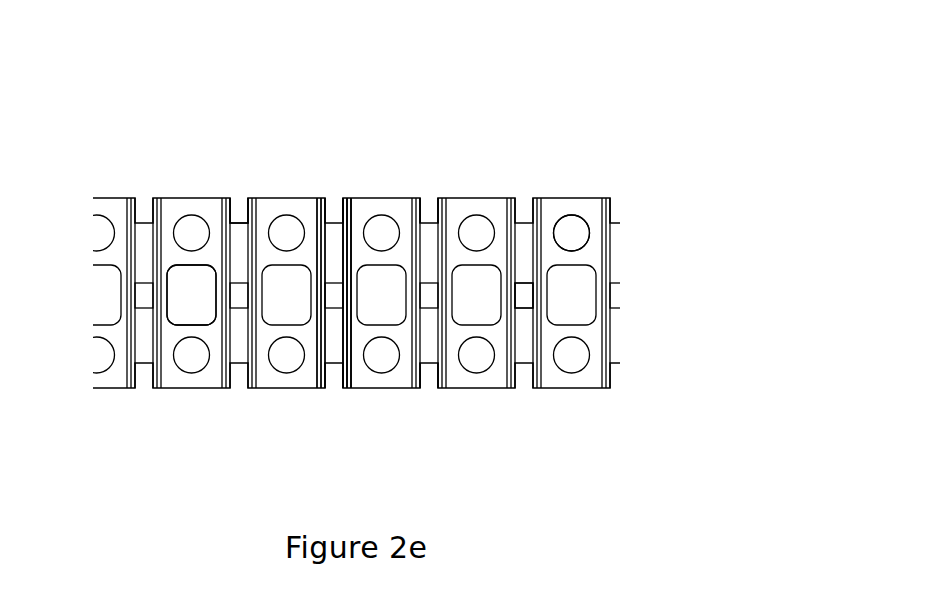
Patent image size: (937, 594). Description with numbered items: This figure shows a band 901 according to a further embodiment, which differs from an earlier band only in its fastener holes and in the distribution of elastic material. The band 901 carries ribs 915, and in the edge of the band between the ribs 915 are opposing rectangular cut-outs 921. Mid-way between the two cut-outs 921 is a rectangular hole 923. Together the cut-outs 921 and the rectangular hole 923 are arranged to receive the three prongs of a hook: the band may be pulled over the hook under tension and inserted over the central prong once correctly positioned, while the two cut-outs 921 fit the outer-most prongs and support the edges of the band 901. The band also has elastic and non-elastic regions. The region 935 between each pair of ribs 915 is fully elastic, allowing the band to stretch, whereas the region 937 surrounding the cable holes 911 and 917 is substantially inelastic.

The band 901 is at (281, 158).
The cable hole 911 is at (192, 296).
The rib 915 is at (324, 240).
The cable hole 917 is at (571, 225).
The rectangular cut-out 921 is at (240, 209).
The rectangular hole 923 is at (525, 302).
The elastic region 935 is at (427, 342).
The inelastic region 937 is at (359, 337).